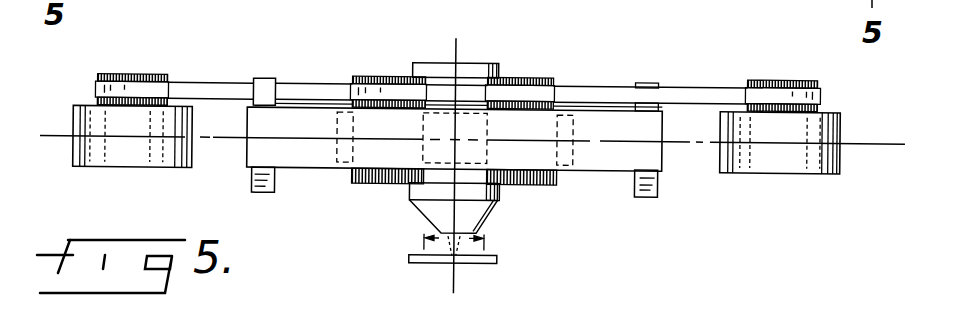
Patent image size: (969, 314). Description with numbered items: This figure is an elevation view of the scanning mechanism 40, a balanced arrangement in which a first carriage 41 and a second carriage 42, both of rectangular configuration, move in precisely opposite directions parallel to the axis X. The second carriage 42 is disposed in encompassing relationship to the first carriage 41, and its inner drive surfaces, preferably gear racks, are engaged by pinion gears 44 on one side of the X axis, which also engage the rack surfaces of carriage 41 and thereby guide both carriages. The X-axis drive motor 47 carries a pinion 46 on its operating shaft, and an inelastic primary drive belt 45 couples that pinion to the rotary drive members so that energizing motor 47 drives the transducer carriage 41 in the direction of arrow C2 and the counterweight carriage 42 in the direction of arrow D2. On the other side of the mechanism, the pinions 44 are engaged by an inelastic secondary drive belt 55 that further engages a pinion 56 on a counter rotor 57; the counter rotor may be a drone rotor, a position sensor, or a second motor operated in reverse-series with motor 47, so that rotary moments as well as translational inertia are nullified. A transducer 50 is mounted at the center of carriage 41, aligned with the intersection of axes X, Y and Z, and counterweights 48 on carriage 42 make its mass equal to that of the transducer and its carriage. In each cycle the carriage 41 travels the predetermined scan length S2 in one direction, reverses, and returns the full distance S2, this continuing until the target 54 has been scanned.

The scanning mechanism 40 is at (605, 72).
The first carriage 41 is at (333, 131).
The second carriage 42 is at (660, 149).
The pinion gears 44 is at (390, 73).
The primary drive belt 45 is at (208, 86).
The pinion 46 is at (142, 44).
The X-axis drive motor 47 is at (122, 159).
The counterweights 48 is at (258, 191).
The transducer 50 is at (410, 194).
The target 54 is at (408, 258).
The secondary drive belt 55 is at (716, 61).
The pinion 56 is at (788, 73).
The counter rotor 57 is at (797, 154).
The arrow C2 is at (462, 66).
The arrow D2 is at (313, 120).
The scan line length S2 is at (468, 229).
The X axis X is at (855, 135).
The Y axis Y is at (453, 254).
The Z axis Z is at (455, 279).